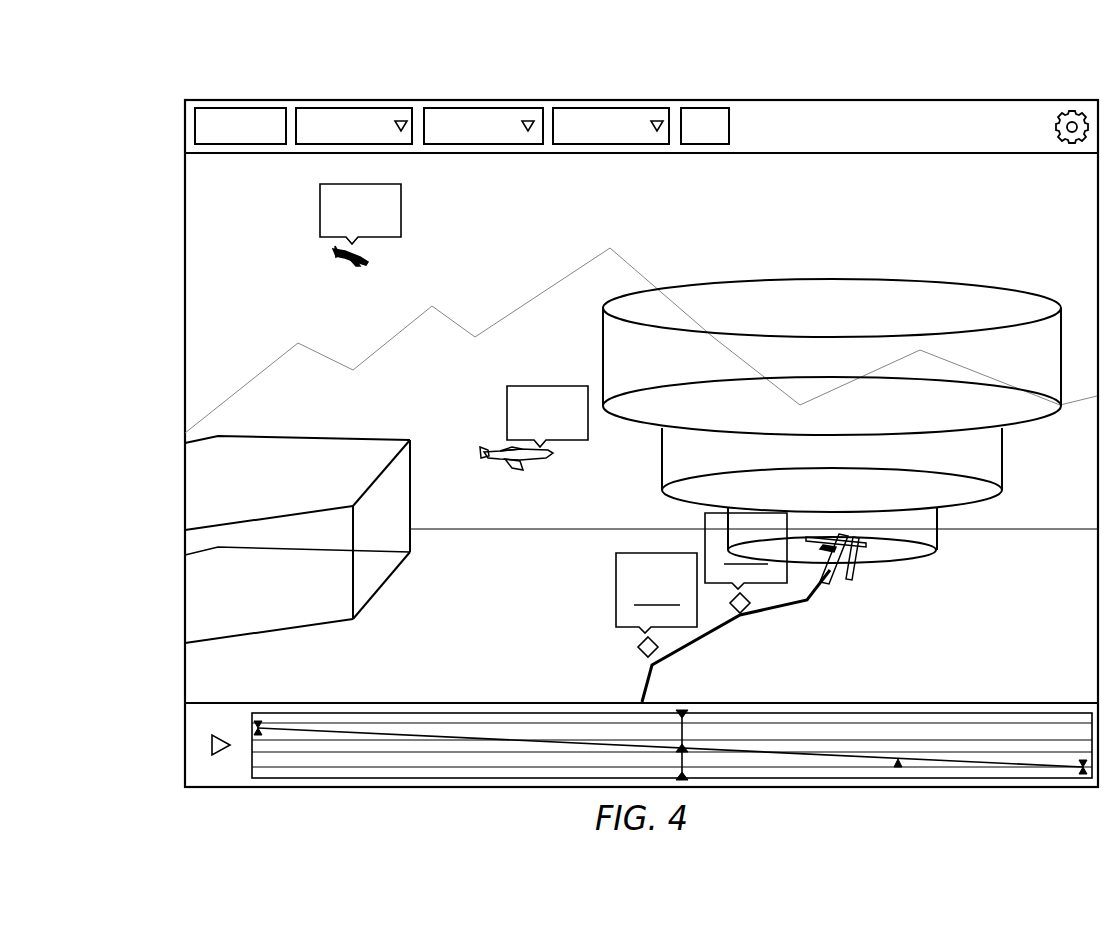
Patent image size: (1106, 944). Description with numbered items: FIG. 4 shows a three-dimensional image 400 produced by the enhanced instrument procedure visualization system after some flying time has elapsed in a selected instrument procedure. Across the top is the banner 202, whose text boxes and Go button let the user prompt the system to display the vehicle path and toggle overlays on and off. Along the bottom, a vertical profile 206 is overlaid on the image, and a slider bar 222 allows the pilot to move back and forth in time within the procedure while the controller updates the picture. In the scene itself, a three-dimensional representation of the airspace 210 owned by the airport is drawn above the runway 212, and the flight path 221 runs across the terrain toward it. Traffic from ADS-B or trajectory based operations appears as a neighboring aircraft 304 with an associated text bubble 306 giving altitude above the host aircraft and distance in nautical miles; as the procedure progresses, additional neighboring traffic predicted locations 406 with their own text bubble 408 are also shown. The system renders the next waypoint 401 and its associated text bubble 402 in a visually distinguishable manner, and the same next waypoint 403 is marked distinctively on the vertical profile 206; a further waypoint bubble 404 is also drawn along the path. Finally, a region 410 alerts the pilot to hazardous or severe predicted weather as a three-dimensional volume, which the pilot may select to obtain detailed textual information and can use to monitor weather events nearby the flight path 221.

The banner 202 is at (931, 108).
The vertical profile 206 is at (998, 733).
The airspace 210 is at (943, 292).
The runway 212 is at (832, 574).
The flight path 221 is at (793, 605).
The slider bar 222 is at (683, 733).
The neighboring aircraft 304 is at (507, 466).
The text bubble 306 is at (518, 386).
The three-dimensional image 400 is at (1066, 191).
The waypoint 401 is at (639, 650).
The text bubble 402 is at (616, 591).
The waypoint 403 is at (683, 752).
The waypoint information box 404 is at (705, 527).
The neighboring traffic predicted locations 406 is at (348, 266).
The text bubble 408 is at (403, 214).
The region 410 is at (325, 440).